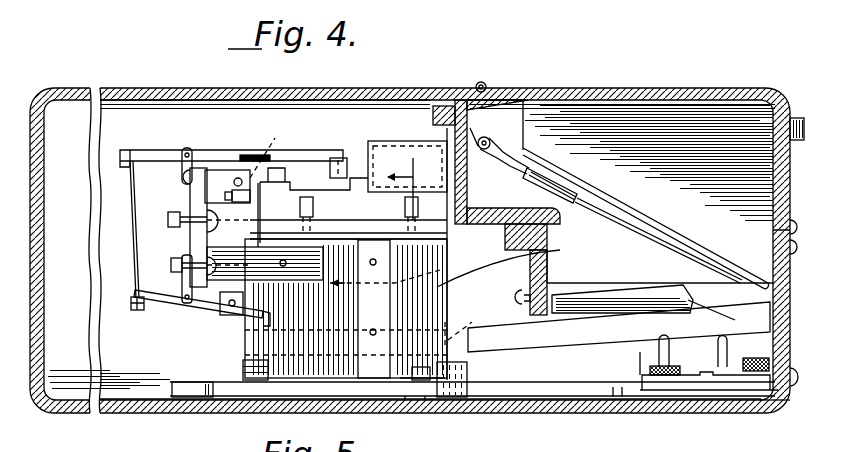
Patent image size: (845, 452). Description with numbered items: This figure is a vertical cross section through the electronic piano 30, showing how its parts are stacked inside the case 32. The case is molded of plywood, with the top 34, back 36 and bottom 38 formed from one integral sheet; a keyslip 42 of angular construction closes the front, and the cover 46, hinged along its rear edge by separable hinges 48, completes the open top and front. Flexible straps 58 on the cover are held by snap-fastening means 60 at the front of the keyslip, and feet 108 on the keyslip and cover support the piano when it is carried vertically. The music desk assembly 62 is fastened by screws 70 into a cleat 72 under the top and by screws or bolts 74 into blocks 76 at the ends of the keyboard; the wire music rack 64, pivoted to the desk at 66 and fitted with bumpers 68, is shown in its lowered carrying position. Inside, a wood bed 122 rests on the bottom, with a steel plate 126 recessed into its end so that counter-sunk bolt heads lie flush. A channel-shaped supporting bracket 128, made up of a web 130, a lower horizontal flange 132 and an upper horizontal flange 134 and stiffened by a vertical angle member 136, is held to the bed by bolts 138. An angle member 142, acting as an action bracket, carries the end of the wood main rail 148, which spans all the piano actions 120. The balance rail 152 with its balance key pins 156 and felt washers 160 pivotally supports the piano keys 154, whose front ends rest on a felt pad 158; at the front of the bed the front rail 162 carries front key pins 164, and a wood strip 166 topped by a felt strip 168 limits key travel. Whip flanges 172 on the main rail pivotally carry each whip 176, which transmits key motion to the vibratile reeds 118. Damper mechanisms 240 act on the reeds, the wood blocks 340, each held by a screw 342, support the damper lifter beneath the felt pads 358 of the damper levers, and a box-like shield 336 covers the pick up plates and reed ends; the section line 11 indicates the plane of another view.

The section line 11 is at (385, 210).
The electronic piano 30 is at (438, 84).
The case 32 is at (133, 85).
The top 34 is at (184, 87).
The back 36 is at (72, 189).
The bottom 38 is at (192, 412).
The keyslip 42 is at (746, 406).
The cover 46 is at (643, 95).
The hinges 48 is at (484, 82).
The flexible straps 58 is at (770, 221).
The snap-fastening means 60 is at (793, 398).
The music desk assembly 62 is at (468, 190).
The wire music rack 64 is at (640, 222).
The pivotal connection 66 is at (489, 137).
The bumpers 68 is at (576, 197).
The screws 70 is at (500, 100).
The cleat 72 is at (413, 100).
The screws or bolts 74 is at (522, 297).
The blocks 76 is at (606, 292).
The feet 108 is at (793, 117).
The vibratile reeds 118 is at (352, 155).
The piano actions 120 is at (192, 307).
The bed 122 is at (590, 386).
The steel plate 126 is at (520, 412).
The supporting bracket 128 is at (452, 282).
The web 130 is at (548, 262).
The lower horizontal flange 132 is at (406, 381).
The upper horizontal flange 134 is at (338, 212).
The angle member 136 is at (347, 317).
The bolts 138 is at (212, 383).
The angle member (action bracket) 142 is at (227, 250).
The main rail 148 is at (190, 241).
The balance rail 152 is at (546, 343).
The piano keys 154 is at (735, 318).
The balance key pins 156 is at (468, 322).
The felt pad 158 is at (245, 368).
The felt pads or washers 160 is at (468, 362).
The front rail 162 is at (755, 378).
The front key pins 164 is at (722, 345).
The wood strip 166 is at (710, 376).
The felt strip 168 is at (755, 357).
The whip flanges 172 is at (182, 265).
The whip 176 is at (144, 311).
The damper mechanisms 240 is at (141, 150).
The box-like shield 336 is at (398, 146).
The wood blocks 340 is at (196, 150).
The screw 342 is at (282, 147).
The felt pad 358 is at (242, 155).